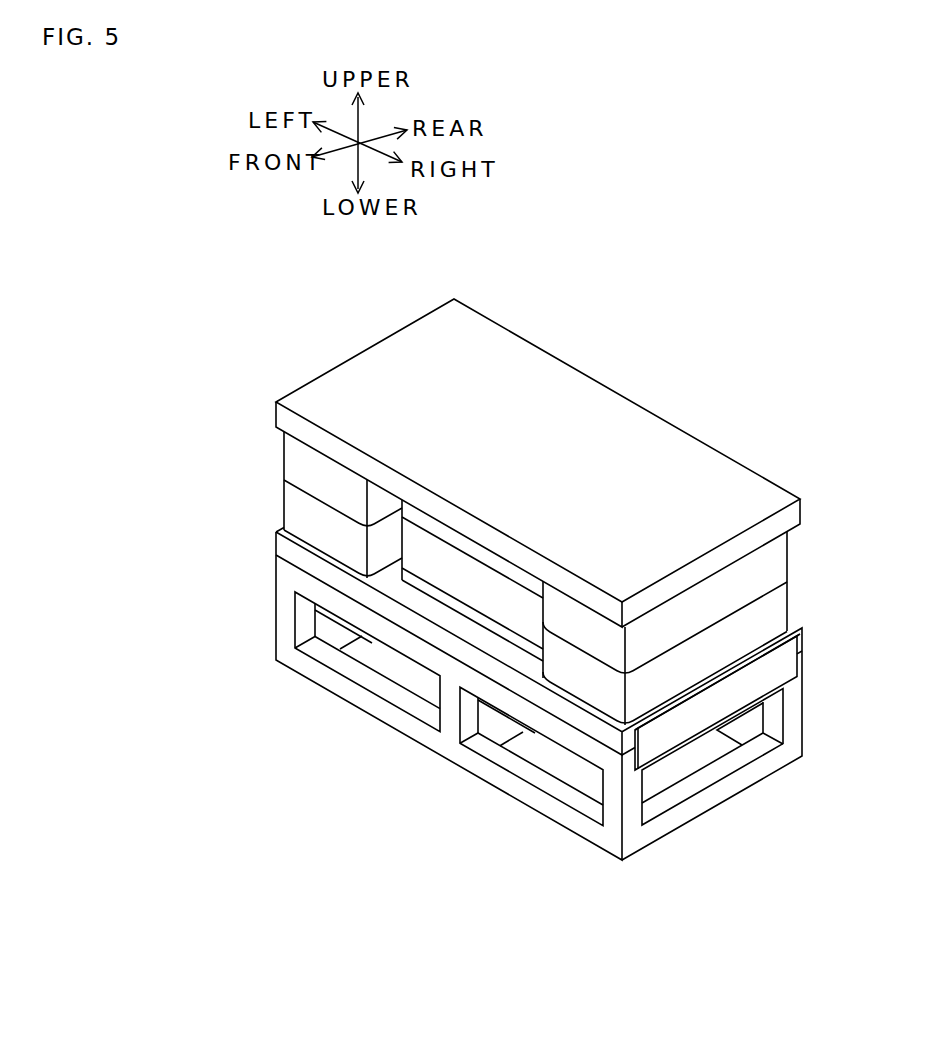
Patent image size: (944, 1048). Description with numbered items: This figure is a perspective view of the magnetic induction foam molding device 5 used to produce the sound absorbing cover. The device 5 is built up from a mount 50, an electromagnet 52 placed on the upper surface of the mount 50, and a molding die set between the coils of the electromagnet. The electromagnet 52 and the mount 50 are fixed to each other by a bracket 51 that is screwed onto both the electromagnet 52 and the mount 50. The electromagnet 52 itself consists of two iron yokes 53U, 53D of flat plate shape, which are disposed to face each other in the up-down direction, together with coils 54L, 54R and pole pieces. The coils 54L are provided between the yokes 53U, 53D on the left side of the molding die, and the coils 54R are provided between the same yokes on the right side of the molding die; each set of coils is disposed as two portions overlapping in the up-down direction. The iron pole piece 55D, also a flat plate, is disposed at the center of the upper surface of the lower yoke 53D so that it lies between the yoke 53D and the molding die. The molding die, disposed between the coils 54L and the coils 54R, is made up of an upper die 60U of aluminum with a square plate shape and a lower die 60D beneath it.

The magnetic induction foam molding device 5 is at (708, 350).
The mount 50 is at (640, 836).
The bracket 51 is at (788, 665).
The electromagnet 52 is at (295, 360).
The yoke 53U is at (701, 478).
The yoke 53D is at (284, 546).
The coils 54L is at (297, 461).
The coils 54R is at (778, 570).
The pole piece 55D is at (420, 585).
The upper die 60U is at (510, 567).
The lower die 60D is at (467, 592).